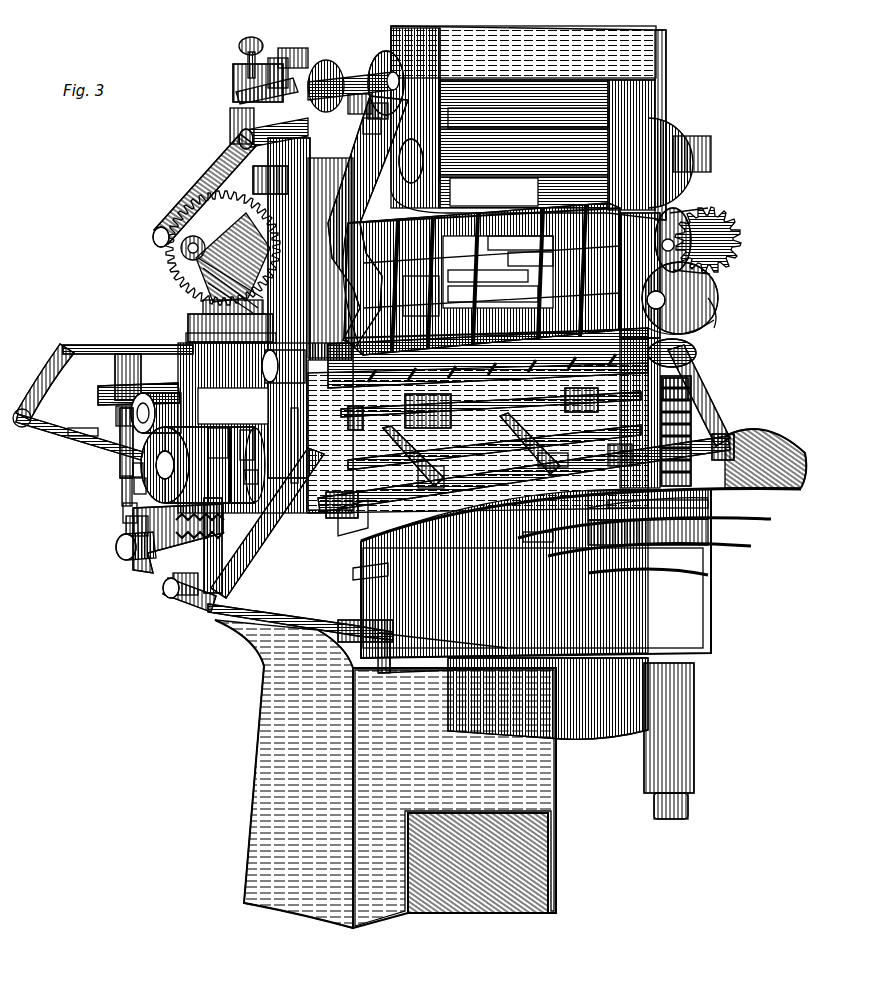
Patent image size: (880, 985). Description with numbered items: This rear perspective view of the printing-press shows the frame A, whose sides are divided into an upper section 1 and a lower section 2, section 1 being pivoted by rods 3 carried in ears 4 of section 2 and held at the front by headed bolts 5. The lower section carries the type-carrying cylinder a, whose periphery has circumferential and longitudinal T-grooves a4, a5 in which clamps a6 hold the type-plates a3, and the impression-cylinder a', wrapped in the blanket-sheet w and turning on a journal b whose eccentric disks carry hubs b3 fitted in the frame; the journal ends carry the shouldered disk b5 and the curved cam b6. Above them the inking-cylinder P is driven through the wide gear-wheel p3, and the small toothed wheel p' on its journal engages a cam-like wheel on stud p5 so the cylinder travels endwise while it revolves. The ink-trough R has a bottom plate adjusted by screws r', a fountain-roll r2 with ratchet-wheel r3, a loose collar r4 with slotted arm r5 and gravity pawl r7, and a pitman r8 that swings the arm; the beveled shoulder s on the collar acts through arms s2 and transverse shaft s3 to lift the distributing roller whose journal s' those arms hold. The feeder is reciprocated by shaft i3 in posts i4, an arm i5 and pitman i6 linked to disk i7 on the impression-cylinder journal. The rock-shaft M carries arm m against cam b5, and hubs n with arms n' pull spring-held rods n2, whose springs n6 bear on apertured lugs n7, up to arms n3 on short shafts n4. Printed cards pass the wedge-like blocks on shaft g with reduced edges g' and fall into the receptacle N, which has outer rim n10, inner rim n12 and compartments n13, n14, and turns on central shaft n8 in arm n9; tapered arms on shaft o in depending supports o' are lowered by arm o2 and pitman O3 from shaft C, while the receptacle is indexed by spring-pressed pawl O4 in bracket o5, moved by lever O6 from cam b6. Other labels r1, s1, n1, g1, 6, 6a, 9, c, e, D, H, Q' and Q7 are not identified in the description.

The ink-trough R is at (551, 118).
The roller r1 is at (520, 110).
The transverse shaft s3 is at (345, 150).
The pawl r7 is at (246, 32).
The ratchet-wheel r3 is at (230, 62).
The arm 6 is at (280, 40).
The loose collar r4 is at (276, 52).
The slotted arm r5 is at (292, 52).
The beveled shoulder s is at (353, 73).
The journal of distributing ink-roller s' is at (360, 79).
The fountain-roll r2 is at (378, 104).
The adjusting screws r' is at (382, 131).
The upper frame section 1 is at (228, 88).
The rod s1 is at (230, 102).
The arms s2 is at (225, 120).
The small toothed wheel p' is at (233, 168).
The stud p5 is at (190, 250).
The pitman r8 is at (185, 200).
The headed bolts 5 is at (200, 292).
The frame A is at (188, 312).
The lower frame section 2 is at (180, 325).
The shaft i3 is at (100, 338).
The arm i5 is at (45, 350).
The posts i4 is at (108, 366).
The handle H is at (83, 422).
The short shafts n4 is at (120, 406).
The hubs n is at (169, 405).
The pitman i6 is at (55, 425).
The arms n3 is at (112, 440).
The journal of impression-cylinder b is at (150, 470).
The springs n6 is at (132, 462).
The disk i7 is at (120, 470).
The apertured lugs n7 is at (128, 478).
The spring-held rods n2 is at (118, 505).
The arm m is at (118, 520).
The arms n' is at (123, 548).
The rock-shaft M is at (130, 552).
The spring Q7 is at (180, 528).
The roller n1 is at (170, 578).
The shaft C is at (175, 600).
The pitman O3 is at (200, 600).
The lever O6 is at (255, 540).
The curved cam b6 is at (215, 420).
The shouldered disk b5 is at (245, 428).
The arm 6a is at (270, 370).
The hubs b3 is at (248, 470).
The inking-cylinder P is at (470, 222).
The longitudinal T-grooves a5 is at (490, 236).
The clamps a6 is at (505, 252).
The type-plates a3 is at (488, 279).
The circumferential T-grooves a4 is at (493, 295).
The type-carrying cylinder a is at (421, 296).
The wide gear-wheel p3 is at (724, 236).
The rods 3 is at (700, 282).
The ears 4 is at (706, 308).
The shaft o is at (473, 447).
The shaft g is at (514, 409).
The reduced edges g' is at (434, 456).
The arm c is at (450, 461).
The cam arm g1 is at (560, 440).
The depending supports o' is at (555, 445).
The arm o2 is at (308, 490).
The impression-cylinder a' is at (344, 534).
The blanket-sheet w is at (362, 576).
The spring-pressed pawl O4 is at (325, 612).
The rail 9 is at (668, 395).
The gear e is at (661, 425).
The lever Q' is at (699, 395).
The drum D is at (765, 448).
The receptacle N is at (581, 573).
The inner circular rim n12 is at (648, 507).
The central compartment n14 is at (652, 500).
The outer compartment n13 is at (470, 540).
The bracket o5 is at (530, 530).
The outer rim n10 is at (548, 668).
The outwardly-extended arm n9 is at (632, 728).
The central depending shaft n8 is at (684, 796).